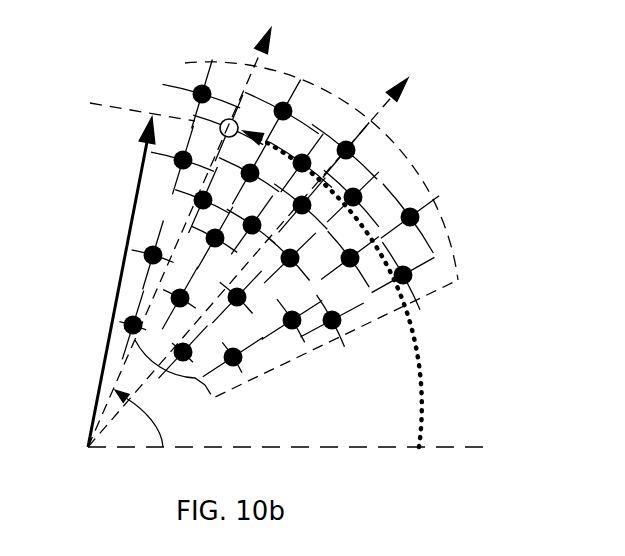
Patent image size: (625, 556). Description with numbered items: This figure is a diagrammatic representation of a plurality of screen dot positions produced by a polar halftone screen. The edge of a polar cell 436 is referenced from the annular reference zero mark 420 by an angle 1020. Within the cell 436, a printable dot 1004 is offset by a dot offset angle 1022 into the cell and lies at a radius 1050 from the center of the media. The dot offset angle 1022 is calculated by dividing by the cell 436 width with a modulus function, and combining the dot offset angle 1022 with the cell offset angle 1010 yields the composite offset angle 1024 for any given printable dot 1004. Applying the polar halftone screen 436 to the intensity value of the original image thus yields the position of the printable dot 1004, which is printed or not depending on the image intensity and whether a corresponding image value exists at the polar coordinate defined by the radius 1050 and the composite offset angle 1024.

The printable dot 1004 is at (220, 124).
The polar cell 436 is at (300, 88).
The dot offset angle 1022 is at (268, 134).
The cell offset angle 1010 is at (373, 118).
The radius 1050 is at (122, 235).
The angle 1020 is at (423, 376).
The annular reference zero mark 420 is at (440, 447).
The composite offset angle 1024 is at (153, 428).